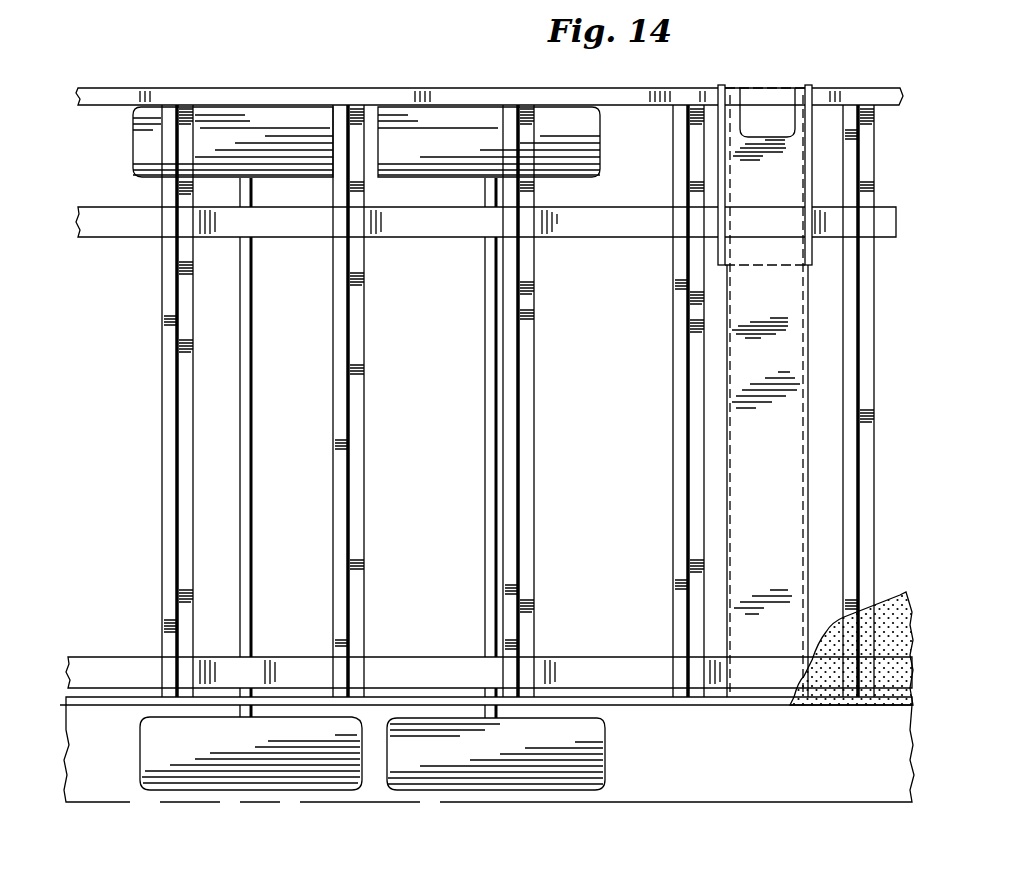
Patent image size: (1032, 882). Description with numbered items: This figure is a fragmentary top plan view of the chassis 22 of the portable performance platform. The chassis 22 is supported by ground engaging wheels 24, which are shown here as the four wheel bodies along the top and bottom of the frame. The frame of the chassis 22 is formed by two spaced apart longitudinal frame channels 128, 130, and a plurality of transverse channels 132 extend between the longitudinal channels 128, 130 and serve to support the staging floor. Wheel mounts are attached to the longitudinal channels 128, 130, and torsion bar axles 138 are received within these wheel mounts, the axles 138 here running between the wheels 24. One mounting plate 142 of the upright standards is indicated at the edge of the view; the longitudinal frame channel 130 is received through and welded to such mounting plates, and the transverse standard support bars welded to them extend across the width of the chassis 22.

The chassis 22 is at (675, 87).
The ground engaging wheels 24 is at (252, 118).
The longitudinal frame channel 128 is at (80, 667).
The longitudinal frame channel 130 is at (92, 226).
The transverse channels 132 is at (178, 448).
The torsion bar axles 138 is at (252, 500).
The mounting plate 142 is at (432, 0).